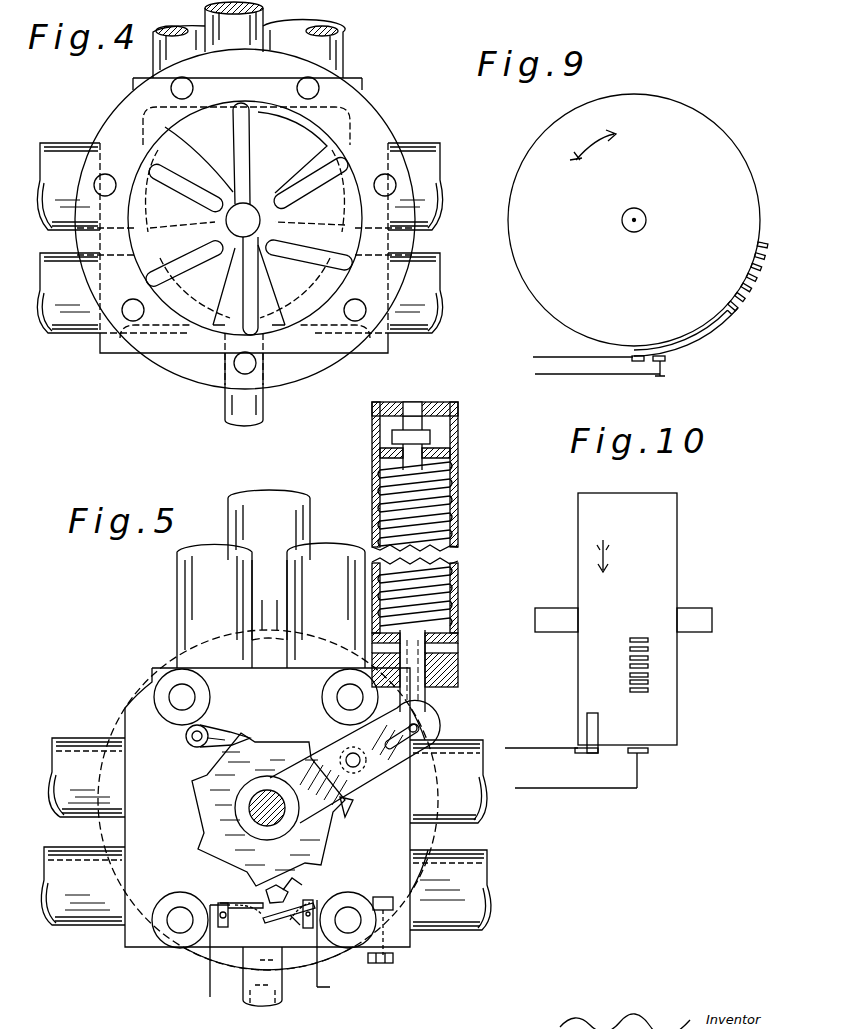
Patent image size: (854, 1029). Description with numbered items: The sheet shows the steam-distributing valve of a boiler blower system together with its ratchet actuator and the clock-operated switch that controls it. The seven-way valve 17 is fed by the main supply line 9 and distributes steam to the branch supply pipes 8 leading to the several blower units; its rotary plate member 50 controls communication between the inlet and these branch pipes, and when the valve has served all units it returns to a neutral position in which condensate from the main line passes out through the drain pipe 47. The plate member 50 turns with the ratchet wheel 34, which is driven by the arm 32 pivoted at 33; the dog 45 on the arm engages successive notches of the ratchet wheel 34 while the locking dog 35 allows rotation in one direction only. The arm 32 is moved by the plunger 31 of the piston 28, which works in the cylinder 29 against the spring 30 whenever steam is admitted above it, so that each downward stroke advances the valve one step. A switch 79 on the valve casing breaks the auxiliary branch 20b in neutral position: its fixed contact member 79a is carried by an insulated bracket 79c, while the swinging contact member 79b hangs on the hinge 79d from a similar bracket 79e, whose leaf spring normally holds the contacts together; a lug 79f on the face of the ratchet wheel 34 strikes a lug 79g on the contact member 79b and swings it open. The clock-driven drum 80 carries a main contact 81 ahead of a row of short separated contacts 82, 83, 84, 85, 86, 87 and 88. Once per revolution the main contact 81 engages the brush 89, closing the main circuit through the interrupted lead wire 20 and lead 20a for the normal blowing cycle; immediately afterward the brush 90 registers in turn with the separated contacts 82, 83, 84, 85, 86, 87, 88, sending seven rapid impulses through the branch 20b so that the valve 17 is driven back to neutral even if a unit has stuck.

In FIG. 4, the branch supply pipe 8 is at (70, 330).
In FIG. 5, the branch supply pipe 8 is at (72, 745).
In FIG. 4, the main supply line 9 is at (282, 13).
In FIG. 5, the main supply line 9 is at (300, 540).
In FIG. 5, the seven-way valve 17 is at (142, 718).
In FIG. 10, the interrupted lead wire 20 is at (507, 625).
In FIG. 9, the main operating circuit lead 20a is at (558, 357).
In FIG. 10, the main operating circuit lead 20a is at (548, 748).
In FIG. 5, the auxiliary circuit branch 20b is at (205, 990).
In FIG. 9, the auxiliary circuit branch 20b is at (565, 374).
In FIG. 10, the auxiliary circuit branch 20b is at (563, 788).
In FIG. 5, the piston 28 is at (452, 455).
In FIG. 5, the cylinder 29 is at (458, 517).
In FIG. 5, the spring 30 is at (458, 566).
In FIG. 5, the plunger 31 is at (420, 690).
In FIG. 5, the arm 32 is at (330, 732).
In FIG. 4, the pivot 33 is at (246, 220).
In FIG. 5, the pivot 33 is at (267, 810).
In FIG. 5, the ratchet wheel 34 is at (192, 806).
In FIG. 5, the locking dog 35 is at (238, 734).
In FIG. 5, the dog 45 is at (353, 805).
In FIG. 4, the drain pipe 47 is at (263, 405).
In FIG. 5, the drain pipe 47 is at (283, 995).
In FIG. 4, the plate member 50 is at (400, 136).
In FIG. 5, the switch 79 is at (276, 905).
In FIG. 5, the contact member 79a is at (240, 924).
In FIG. 5, the contact member 79b is at (268, 922).
In FIG. 5, the bracket 79c is at (315, 900).
In FIG. 5, the hinge 79d is at (325, 880).
In FIG. 5, the bracket and leaf spring 79e is at (291, 932).
In FIG. 5, the lug 79f is at (297, 863).
In FIG. 5, the lug 79g is at (265, 888).
In FIG. 9, the drum 80 is at (742, 180).
In FIG. 10, the drum 80 is at (673, 558).
In FIG. 9, the main contact 81 is at (690, 358).
In FIG. 10, the main contact 81 is at (598, 731).
In FIG. 9, the separated contact 82 is at (737, 309).
In FIG. 10, the separated contact 82 is at (630, 690).
In FIG. 9, the separated contact 83 is at (744, 300).
In FIG. 10, the separated contact 83 is at (648, 682).
In FIG. 9, the separated contact 84 is at (751, 290).
In FIG. 10, the separated contact 84 is at (630, 675).
In FIG. 9, the separated contact 85 is at (756, 280).
In FIG. 10, the separated contact 85 is at (648, 666).
In FIG. 9, the separated contact 86 is at (761, 269).
In FIG. 10, the separated contact 86 is at (630, 658).
In FIG. 9, the separated contact 87 is at (765, 258).
In FIG. 10, the separated contact 87 is at (648, 649).
In FIG. 9, the separated contact 88 is at (768, 246).
In FIG. 10, the separated contact 88 is at (630, 640).
In FIG. 9, the brush 89 is at (637, 362).
In FIG. 10, the brush 89 is at (578, 748).
In FIG. 9, the brush 90 is at (662, 362).
In FIG. 10, the brush 90 is at (650, 753).